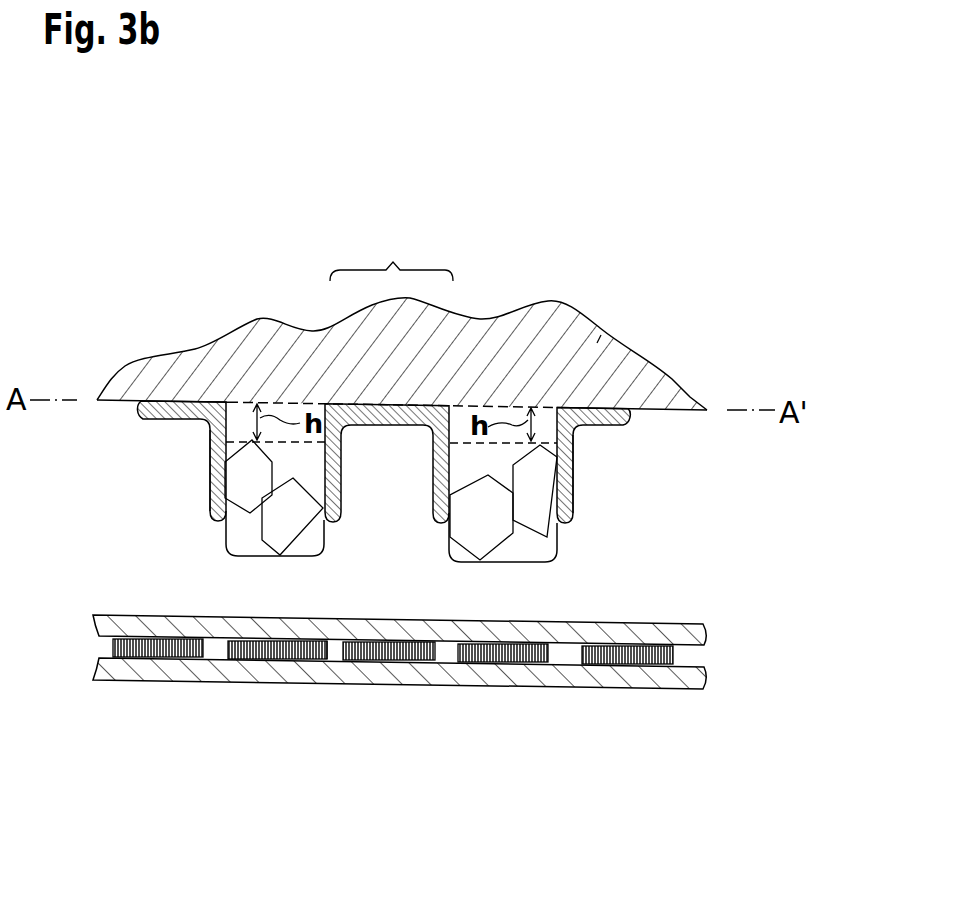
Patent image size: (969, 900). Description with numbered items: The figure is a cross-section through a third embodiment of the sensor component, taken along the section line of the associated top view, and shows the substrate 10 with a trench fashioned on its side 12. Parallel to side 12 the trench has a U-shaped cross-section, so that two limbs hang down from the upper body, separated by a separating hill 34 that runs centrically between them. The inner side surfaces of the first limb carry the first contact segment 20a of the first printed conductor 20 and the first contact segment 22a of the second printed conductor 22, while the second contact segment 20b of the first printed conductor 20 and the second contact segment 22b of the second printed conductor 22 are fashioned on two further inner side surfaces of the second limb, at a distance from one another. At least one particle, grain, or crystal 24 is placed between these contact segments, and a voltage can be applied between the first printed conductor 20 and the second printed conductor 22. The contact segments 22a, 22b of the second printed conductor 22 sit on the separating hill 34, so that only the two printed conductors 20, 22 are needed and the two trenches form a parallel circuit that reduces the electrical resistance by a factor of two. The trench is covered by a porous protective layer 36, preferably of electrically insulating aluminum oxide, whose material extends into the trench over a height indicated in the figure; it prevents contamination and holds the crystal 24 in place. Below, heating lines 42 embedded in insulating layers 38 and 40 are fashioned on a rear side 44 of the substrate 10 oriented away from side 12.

The substrate 10 is at (685, 562).
The side of substrate 12 is at (660, 400).
The first printed conductor 20 is at (168, 420).
The first contact segment of first printed conductor 20a is at (208, 475).
The second contact segment of first printed conductor 20b is at (573, 500).
The second printed conductor 22 is at (390, 425).
The first contact segment of second printed conductor 22a is at (339, 500).
The second contact segment of second printed conductor 22b is at (444, 500).
The particle, grain, and/or crystal 24 is at (287, 522).
The separating hill 34 is at (391, 257).
The porous protective layer 36 is at (597, 343).
The insulating layer 38 is at (575, 633).
The insulating layer 40 is at (517, 670).
The heating lines 42 is at (163, 657).
The rear side of substrate 44 is at (328, 643).